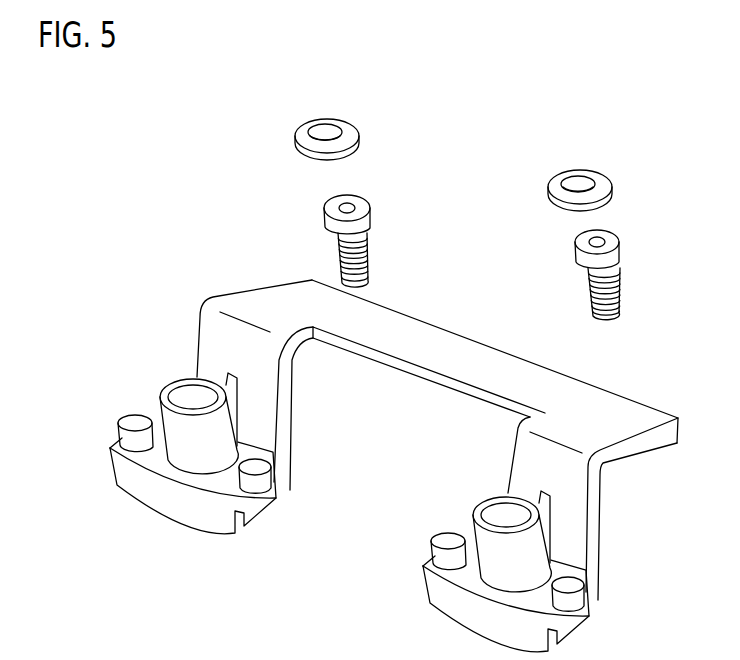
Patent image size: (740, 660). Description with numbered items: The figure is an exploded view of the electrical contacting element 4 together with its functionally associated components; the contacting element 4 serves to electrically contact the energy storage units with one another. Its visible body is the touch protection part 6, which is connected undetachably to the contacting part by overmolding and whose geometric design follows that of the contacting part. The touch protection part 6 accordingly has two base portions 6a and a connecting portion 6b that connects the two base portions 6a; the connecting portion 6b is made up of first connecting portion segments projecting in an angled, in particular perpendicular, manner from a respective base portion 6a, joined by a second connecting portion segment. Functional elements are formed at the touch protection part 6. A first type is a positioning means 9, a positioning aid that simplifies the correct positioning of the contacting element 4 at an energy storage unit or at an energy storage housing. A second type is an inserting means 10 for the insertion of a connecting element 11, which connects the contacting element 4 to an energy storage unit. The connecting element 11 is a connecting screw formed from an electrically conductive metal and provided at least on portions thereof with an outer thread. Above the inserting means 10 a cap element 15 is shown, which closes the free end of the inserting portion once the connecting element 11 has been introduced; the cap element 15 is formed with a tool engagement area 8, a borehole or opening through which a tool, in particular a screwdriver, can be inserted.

The contacting element 4 is at (381, 406).
The touch protection part 6 is at (437, 440).
The base portion 6a is at (288, 412).
The connecting portion 6b is at (448, 348).
The tool engagement area 8 is at (337, 110).
The positioning means 9 is at (544, 592).
The inserting means 10 is at (578, 544).
The connecting element 11 is at (333, 203).
The cap element 15 is at (309, 105).